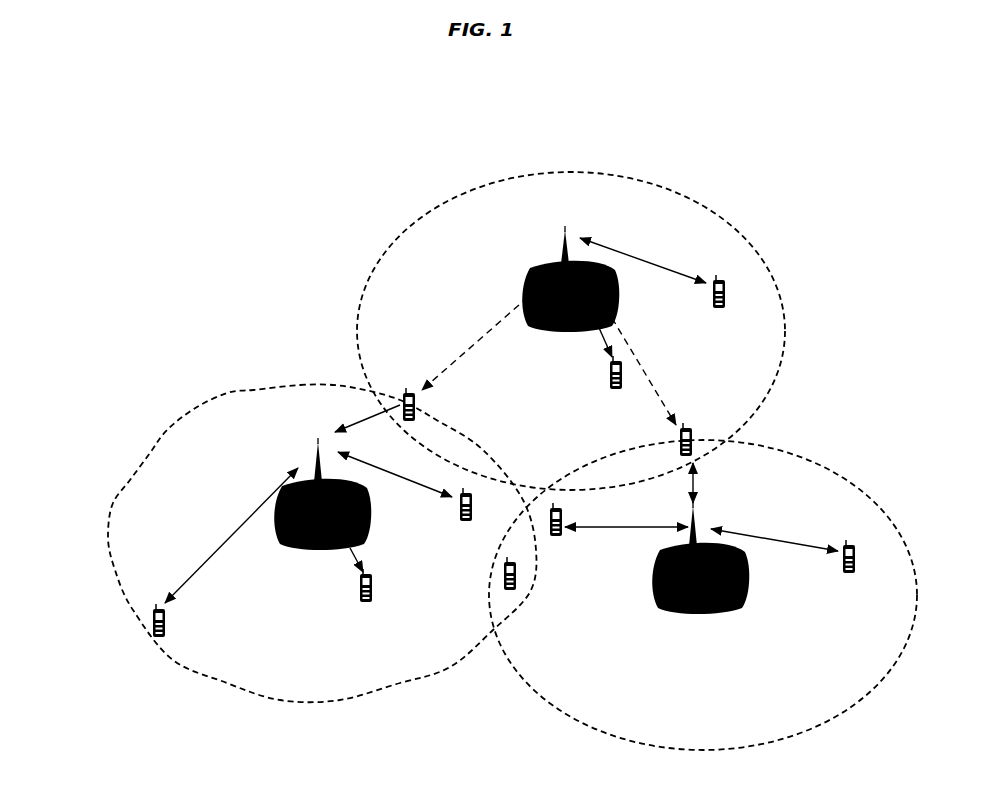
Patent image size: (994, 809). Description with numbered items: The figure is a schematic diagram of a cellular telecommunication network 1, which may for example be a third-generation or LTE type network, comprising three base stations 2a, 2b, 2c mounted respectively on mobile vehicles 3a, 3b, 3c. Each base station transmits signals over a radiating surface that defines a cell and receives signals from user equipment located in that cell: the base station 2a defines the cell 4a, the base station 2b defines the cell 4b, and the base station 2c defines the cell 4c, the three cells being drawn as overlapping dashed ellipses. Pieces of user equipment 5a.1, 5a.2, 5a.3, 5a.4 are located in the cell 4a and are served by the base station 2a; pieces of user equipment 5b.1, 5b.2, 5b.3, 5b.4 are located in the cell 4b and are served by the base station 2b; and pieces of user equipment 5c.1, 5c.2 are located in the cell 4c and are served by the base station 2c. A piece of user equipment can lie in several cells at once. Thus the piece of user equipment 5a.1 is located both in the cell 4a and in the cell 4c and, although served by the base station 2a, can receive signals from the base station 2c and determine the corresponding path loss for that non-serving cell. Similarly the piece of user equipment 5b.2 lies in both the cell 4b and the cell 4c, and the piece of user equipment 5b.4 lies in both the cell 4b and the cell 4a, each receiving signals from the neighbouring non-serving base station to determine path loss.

The cellular telecommunication network 1 is at (250, 282).
The base station 2a is at (314, 462).
The base station 2b is at (702, 519).
The base station 2c is at (561, 246).
The mobile vehicle 3a is at (310, 548).
The mobile vehicle 3b is at (680, 608).
The mobile vehicle 3c is at (618, 300).
The cell 4a is at (215, 680).
The cell 4b is at (790, 454).
The cell 4c is at (780, 293).
The piece of user equipment 5a.1 is at (416, 406).
The piece of user equipment 5a.2 is at (465, 525).
The piece of user equipment 5a.3 is at (364, 605).
The piece of user equipment 5a.4 is at (152, 621).
The piece of user equipment 5b.1 is at (557, 538).
The piece of user equipment 5b.2 is at (692, 456).
The piece of user equipment 5b.3 is at (845, 577).
The piece of user equipment 5b.4 is at (514, 598).
The piece of user equipment 5c.1 is at (608, 372).
The piece of user equipment 5c.2 is at (727, 276).